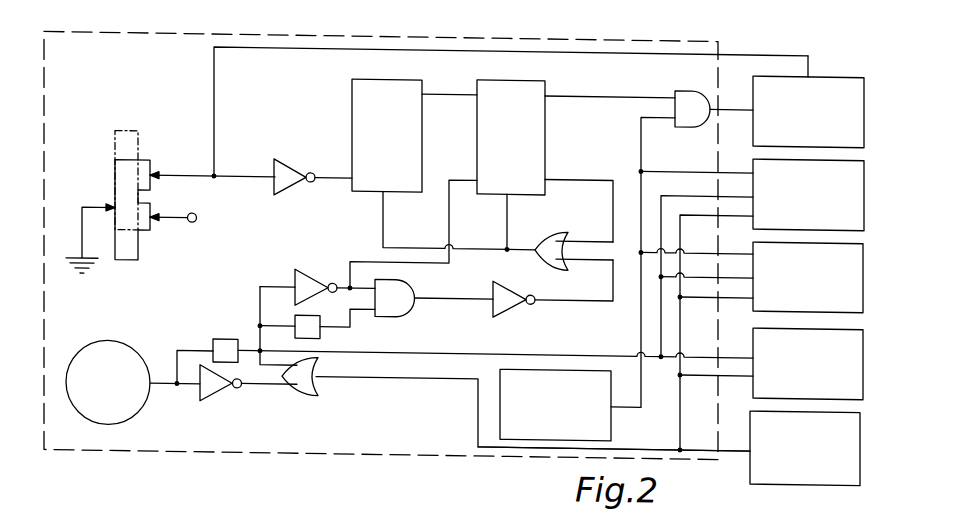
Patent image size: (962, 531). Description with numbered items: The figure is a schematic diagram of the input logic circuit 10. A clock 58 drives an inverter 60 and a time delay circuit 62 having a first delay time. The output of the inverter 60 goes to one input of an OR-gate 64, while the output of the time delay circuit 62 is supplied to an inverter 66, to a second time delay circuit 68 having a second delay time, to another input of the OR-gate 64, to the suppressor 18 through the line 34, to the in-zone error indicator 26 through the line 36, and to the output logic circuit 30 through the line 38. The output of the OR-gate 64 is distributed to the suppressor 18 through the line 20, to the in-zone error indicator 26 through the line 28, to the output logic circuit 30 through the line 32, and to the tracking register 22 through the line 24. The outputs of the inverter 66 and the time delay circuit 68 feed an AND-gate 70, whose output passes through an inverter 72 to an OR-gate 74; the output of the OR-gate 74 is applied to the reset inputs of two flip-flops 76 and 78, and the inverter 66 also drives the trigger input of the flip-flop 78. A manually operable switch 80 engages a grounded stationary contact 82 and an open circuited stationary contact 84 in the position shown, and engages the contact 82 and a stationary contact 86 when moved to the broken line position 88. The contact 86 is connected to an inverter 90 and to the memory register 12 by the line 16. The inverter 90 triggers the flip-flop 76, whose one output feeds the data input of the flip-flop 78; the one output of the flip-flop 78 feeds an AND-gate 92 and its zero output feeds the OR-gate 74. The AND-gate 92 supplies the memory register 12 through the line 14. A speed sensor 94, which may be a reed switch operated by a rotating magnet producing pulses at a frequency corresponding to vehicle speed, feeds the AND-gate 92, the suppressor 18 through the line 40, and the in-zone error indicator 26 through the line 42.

The input logic circuit 10 is at (293, 36).
The memory register 12 is at (828, 72).
The line 14 is at (730, 104).
The line 16 is at (770, 57).
The suppressor 18 is at (866, 170).
The line 20 is at (716, 213).
The tracking register 22 is at (810, 480).
The line 24 is at (742, 449).
The in-zone error indicator 26 is at (865, 254).
The line 28 is at (723, 296).
The output logic circuit 30 is at (865, 339).
The line 32 is at (712, 372).
The line 34 is at (700, 193).
The line 36 is at (702, 276).
The line 38 is at (713, 354).
The line 40 is at (672, 168).
The line 42 is at (712, 256).
The clock 58 is at (122, 350).
The inverter 60 is at (225, 405).
The time delay circuit 62 is at (220, 343).
The OR-gate 64 is at (316, 398).
The inverter 66 is at (305, 278).
The time delay circuit 68 is at (322, 341).
The AND-gate 70 is at (396, 318).
The inverter 72 is at (512, 317).
The OR-gate 74 is at (552, 231).
The flip-flop 76 is at (368, 193).
The flip-flop 78 is at (540, 80).
The manually operable switch 80 is at (120, 265).
The grounded stationary contact 82 is at (88, 213).
The open circuited stationary contact 84 is at (170, 222).
The stationary contact 86 is at (172, 180).
The broken line position 88 is at (122, 136).
The inverter 90 is at (283, 162).
The AND-gate 92 is at (685, 88).
The speed sensor 94 is at (611, 415).